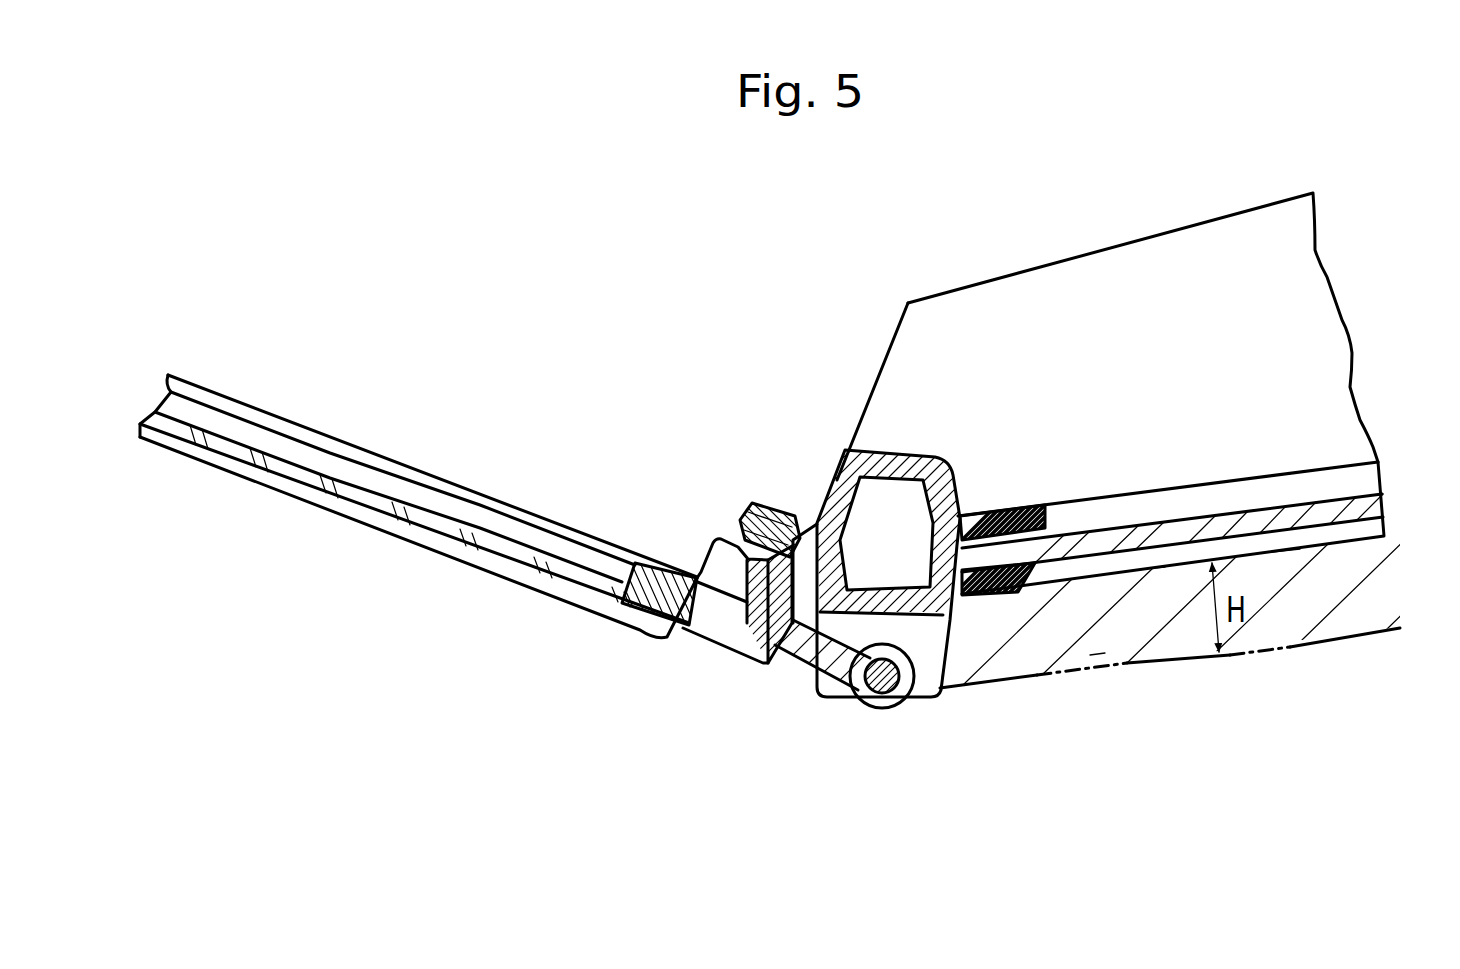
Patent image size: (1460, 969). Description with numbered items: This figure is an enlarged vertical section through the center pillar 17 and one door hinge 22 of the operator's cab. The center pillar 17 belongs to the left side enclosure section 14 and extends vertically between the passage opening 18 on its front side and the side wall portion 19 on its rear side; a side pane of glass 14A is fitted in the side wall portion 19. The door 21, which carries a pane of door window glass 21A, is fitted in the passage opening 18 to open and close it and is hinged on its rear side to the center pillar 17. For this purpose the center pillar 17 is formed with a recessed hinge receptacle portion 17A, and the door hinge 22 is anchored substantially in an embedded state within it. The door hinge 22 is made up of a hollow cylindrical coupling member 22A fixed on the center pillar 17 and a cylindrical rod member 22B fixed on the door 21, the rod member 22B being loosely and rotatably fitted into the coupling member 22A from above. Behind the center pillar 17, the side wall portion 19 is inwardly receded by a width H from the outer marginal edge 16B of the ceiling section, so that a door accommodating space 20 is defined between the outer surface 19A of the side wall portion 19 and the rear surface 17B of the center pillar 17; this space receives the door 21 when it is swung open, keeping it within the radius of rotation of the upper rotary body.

The left side enclosure section 14 is at (1370, 541).
The side pane of glass 14A is at (1302, 517).
The outer marginal edge of the ceiling section 16B is at (1230, 657).
The center pillar 17 is at (863, 465).
The hinge receptacle recess 17A is at (950, 650).
The rear surface of the center pillar 17B is at (947, 677).
The passage opening 18 is at (757, 502).
The side wall portion 19 is at (1272, 552).
The outer surface of the side wall portion 19A is at (1157, 568).
The door accommodating space 20 is at (1098, 650).
The door 21 is at (718, 633).
The door window glass pane 21A is at (277, 467).
The door hinge 22 is at (878, 703).
The hollow cylindrical coupling member 22A is at (857, 703).
The cylindrical rod member 22B is at (890, 683).